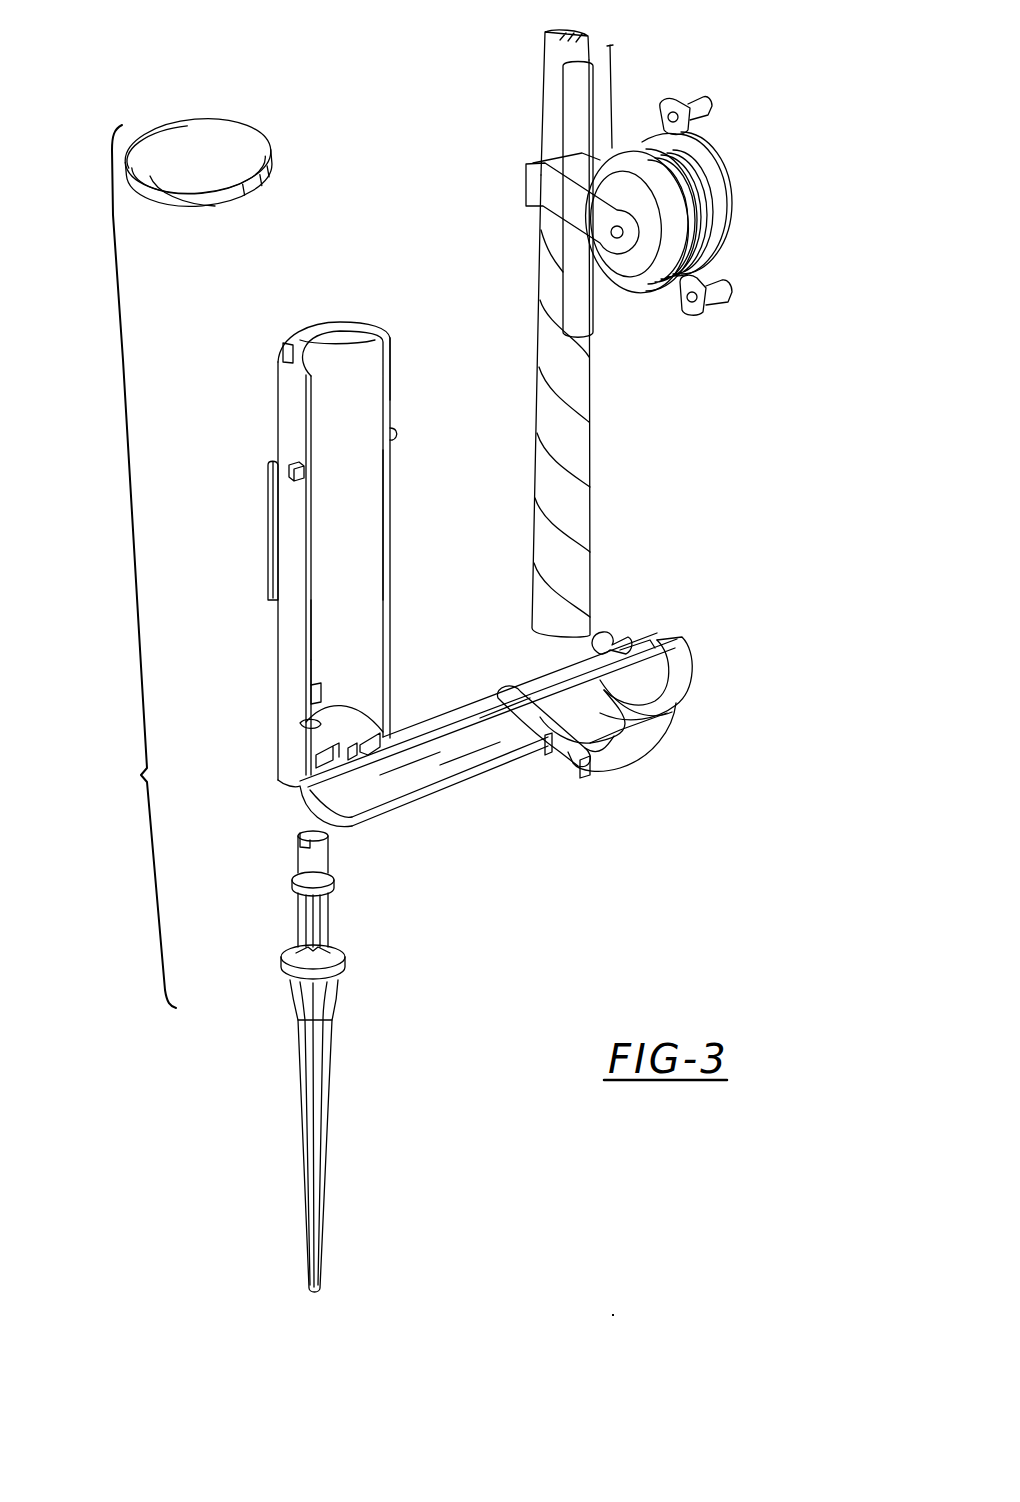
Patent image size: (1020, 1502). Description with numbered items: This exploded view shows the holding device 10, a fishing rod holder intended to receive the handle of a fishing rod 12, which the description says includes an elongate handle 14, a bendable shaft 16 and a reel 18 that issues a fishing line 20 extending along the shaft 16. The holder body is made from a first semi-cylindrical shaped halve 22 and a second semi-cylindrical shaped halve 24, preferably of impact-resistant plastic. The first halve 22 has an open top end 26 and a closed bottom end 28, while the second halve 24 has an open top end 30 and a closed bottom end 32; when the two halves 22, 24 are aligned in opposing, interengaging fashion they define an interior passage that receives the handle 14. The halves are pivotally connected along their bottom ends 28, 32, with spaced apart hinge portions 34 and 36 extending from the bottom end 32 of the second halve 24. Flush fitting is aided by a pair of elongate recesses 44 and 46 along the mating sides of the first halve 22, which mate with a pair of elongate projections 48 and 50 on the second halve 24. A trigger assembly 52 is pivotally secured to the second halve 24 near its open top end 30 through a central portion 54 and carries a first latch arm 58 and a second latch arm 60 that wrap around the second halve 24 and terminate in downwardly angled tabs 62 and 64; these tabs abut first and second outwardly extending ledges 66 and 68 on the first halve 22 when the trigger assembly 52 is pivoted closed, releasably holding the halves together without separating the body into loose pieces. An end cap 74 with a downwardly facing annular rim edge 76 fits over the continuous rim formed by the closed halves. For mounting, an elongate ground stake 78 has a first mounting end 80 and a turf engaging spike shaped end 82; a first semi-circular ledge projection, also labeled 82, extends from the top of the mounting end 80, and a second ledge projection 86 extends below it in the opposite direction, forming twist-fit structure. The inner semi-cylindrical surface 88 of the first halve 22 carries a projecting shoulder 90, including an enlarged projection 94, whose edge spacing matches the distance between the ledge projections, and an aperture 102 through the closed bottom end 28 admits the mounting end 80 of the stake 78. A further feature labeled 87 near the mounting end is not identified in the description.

The holding device 10 is at (138, 566).
The fishing rod 12 is at (404, 355).
The elongate handle 14 is at (578, 380).
The bendable shaft 16 is at (550, 88).
The reel 18 is at (718, 183).
The fishing line 20 is at (612, 108).
The first semi-cylindrical shaped halve 22 is at (265, 394).
The second semi-cylindrical shaped halve 24 is at (498, 804).
The open top end 26 is at (340, 340).
The closed bottom end 28 is at (362, 713).
The open top end 30 is at (676, 680).
The closed bottom end 32 is at (300, 788).
The hinge portion 34 is at (300, 755).
The hinge portion 36 is at (370, 752).
The elongate extending recess 44 is at (300, 625).
The elongate extending recess 46 is at (392, 515).
The elongate extending projection 48 is at (450, 737).
The elongate extending projection 50 is at (500, 688).
The trigger assembly 52 is at (598, 790).
The central portion 54 is at (647, 752).
The first latch arm 58 is at (540, 742).
The second latch arm 60 is at (640, 655).
The downwardly angled tab 62 is at (513, 686).
The downwardly angled tab 64 is at (605, 638).
The first outwardly extending ledge 66 is at (300, 485).
The second outwardly extending ledge 68 is at (395, 433).
The end cap 74 is at (245, 133).
The downwardly facing annular rim edge 76 is at (166, 200).
The elongate ground stake 78 is at (268, 972).
The first mounting end 80 is at (290, 882).
The turf engaging spike shaped end 82 is at (305, 845).
The second arcuate ledge projection 86 is at (330, 878).
The peg notch 87 is at (300, 831).
The inner semi-cylindrical shaped surface 88 is at (358, 647).
The projecting shoulder 90 is at (334, 688).
The second enlarged projection 94 is at (310, 700).
The aperture 102 is at (305, 722).